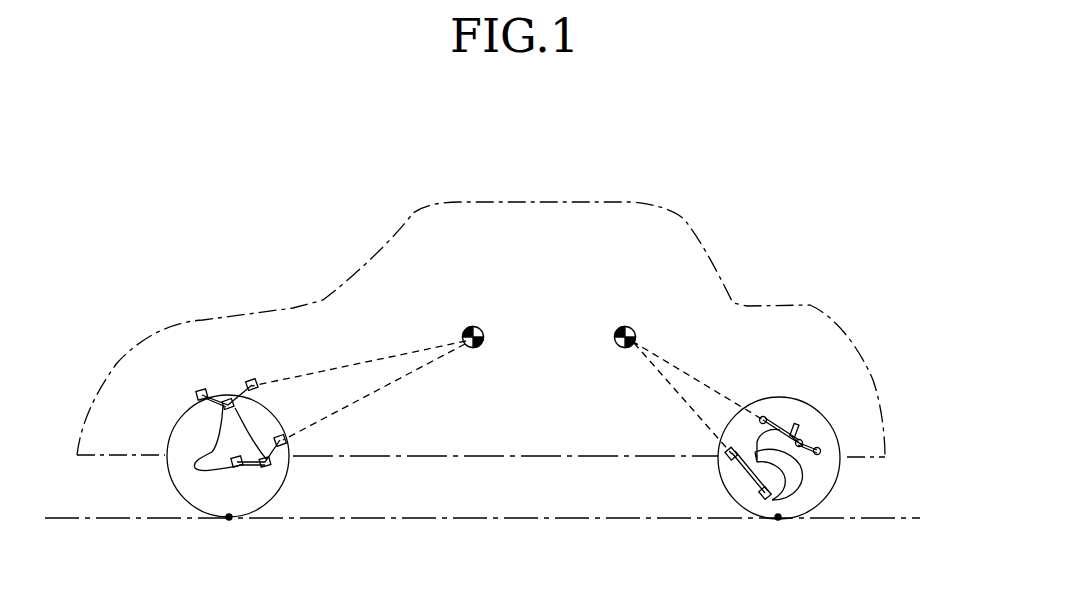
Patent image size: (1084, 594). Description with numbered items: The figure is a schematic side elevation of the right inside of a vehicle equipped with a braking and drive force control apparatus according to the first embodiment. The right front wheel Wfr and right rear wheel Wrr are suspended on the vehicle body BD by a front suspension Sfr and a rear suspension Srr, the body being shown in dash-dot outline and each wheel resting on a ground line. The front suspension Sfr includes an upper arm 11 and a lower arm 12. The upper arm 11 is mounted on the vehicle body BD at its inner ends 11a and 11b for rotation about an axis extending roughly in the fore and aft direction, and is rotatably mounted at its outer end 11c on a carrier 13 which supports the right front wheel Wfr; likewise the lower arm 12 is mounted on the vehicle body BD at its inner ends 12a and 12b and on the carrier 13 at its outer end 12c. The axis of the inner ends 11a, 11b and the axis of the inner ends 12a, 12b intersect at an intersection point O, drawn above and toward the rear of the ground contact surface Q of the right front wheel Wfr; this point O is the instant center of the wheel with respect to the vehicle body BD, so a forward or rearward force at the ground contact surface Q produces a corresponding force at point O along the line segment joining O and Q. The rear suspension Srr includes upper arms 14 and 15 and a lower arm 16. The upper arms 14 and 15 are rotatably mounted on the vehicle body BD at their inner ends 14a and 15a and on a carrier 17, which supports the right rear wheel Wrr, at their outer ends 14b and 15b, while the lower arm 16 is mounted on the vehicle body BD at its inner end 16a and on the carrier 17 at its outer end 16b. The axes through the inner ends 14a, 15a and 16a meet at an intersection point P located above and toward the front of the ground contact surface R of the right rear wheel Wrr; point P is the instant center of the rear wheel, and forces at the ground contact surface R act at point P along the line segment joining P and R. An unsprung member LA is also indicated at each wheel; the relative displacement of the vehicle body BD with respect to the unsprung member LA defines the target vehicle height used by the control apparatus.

The upper arm 11 is at (235, 370).
The inner end 11a is at (200, 392).
The inner end 11b is at (250, 378).
The outer end 11c is at (228, 401).
The lower arm 12 is at (322, 507).
The inner end 12a is at (241, 467).
The inner end 12b is at (291, 456).
The outer end 12c is at (268, 465).
The carrier 13 is at (212, 438).
The upper arm 14 is at (756, 383).
The inner end 14a is at (762, 417).
The outer end 14b is at (798, 423).
The upper arm 15 is at (871, 414).
The inner end 15a is at (888, 448).
The outer end 15b is at (878, 384).
The lower arm 16 is at (715, 519).
The inner end 16a is at (723, 463).
The outer end 16b is at (765, 497).
The carrier 17 is at (803, 468).
The intersection point O is at (484, 325).
The intersection point P is at (615, 324).
The ground contact surface Q is at (228, 543).
The ground contact surface R is at (778, 543).
The vehicle body BD is at (507, 457).
The unsprung member LA is at (156, 483).
The front suspension Sfr is at (195, 452).
The rear suspension Srr is at (811, 420).
The right front wheel Wfr is at (187, 502).
The right rear wheel Wrr is at (828, 493).